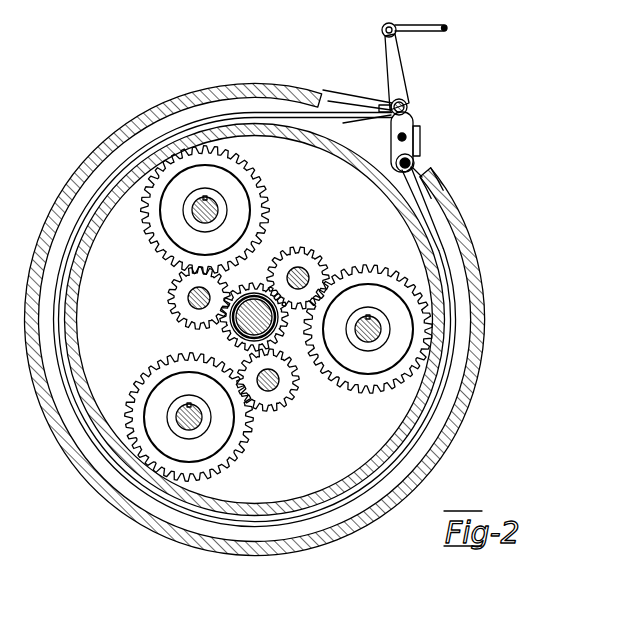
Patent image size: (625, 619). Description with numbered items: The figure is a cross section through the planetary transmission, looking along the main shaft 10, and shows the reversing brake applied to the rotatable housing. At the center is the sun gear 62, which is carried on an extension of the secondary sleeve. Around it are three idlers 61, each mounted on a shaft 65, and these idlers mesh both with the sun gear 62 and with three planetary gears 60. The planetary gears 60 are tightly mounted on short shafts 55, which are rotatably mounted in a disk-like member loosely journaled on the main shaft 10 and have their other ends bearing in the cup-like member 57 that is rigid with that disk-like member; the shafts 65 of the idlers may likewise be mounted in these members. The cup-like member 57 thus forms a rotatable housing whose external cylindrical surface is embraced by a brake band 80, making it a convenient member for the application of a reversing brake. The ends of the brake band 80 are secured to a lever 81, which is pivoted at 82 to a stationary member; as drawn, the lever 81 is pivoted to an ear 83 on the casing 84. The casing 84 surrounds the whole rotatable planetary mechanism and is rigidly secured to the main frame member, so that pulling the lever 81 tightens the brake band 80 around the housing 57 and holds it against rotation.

The main shaft 10 is at (252, 297).
The short shafts 55 is at (194, 216).
The cup-like member 57 is at (410, 427).
The planetary gears 60 is at (250, 174).
The idlers 61 is at (323, 261).
The sun gear 62 is at (230, 344).
The shafts 65 is at (298, 268).
The brake band 80 is at (330, 104).
The lever 81 is at (397, 80).
The pivot 82 is at (408, 137).
The ear 83 is at (421, 152).
The casing 84 is at (462, 222).